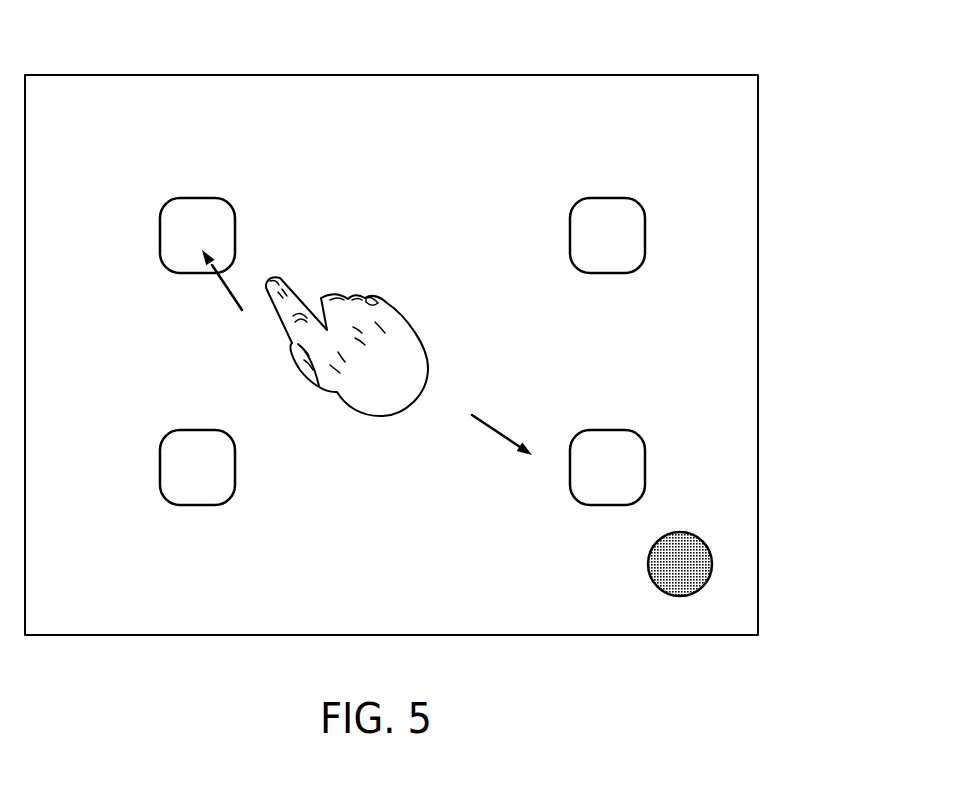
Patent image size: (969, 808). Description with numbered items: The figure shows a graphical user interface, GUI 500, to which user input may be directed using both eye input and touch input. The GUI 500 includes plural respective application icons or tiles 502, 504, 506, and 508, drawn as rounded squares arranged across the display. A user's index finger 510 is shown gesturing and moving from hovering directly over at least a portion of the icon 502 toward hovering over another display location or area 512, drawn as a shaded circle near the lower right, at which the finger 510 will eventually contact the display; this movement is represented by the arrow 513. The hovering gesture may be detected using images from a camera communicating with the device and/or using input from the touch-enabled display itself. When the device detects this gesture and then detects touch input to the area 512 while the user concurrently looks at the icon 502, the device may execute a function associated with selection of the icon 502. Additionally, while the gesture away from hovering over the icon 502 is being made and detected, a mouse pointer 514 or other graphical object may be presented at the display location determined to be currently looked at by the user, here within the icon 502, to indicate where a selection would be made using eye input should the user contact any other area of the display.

The GUI 500 is at (742, 40).
The application icon 502 is at (196, 198).
The application icon 504 is at (608, 198).
The application icon 506 is at (196, 430).
The application icon 508 is at (608, 430).
The index finger 510 is at (281, 278).
The display location/area 512 is at (647, 565).
The arrow 513 is at (481, 422).
The mouse pointer 514 is at (228, 291).